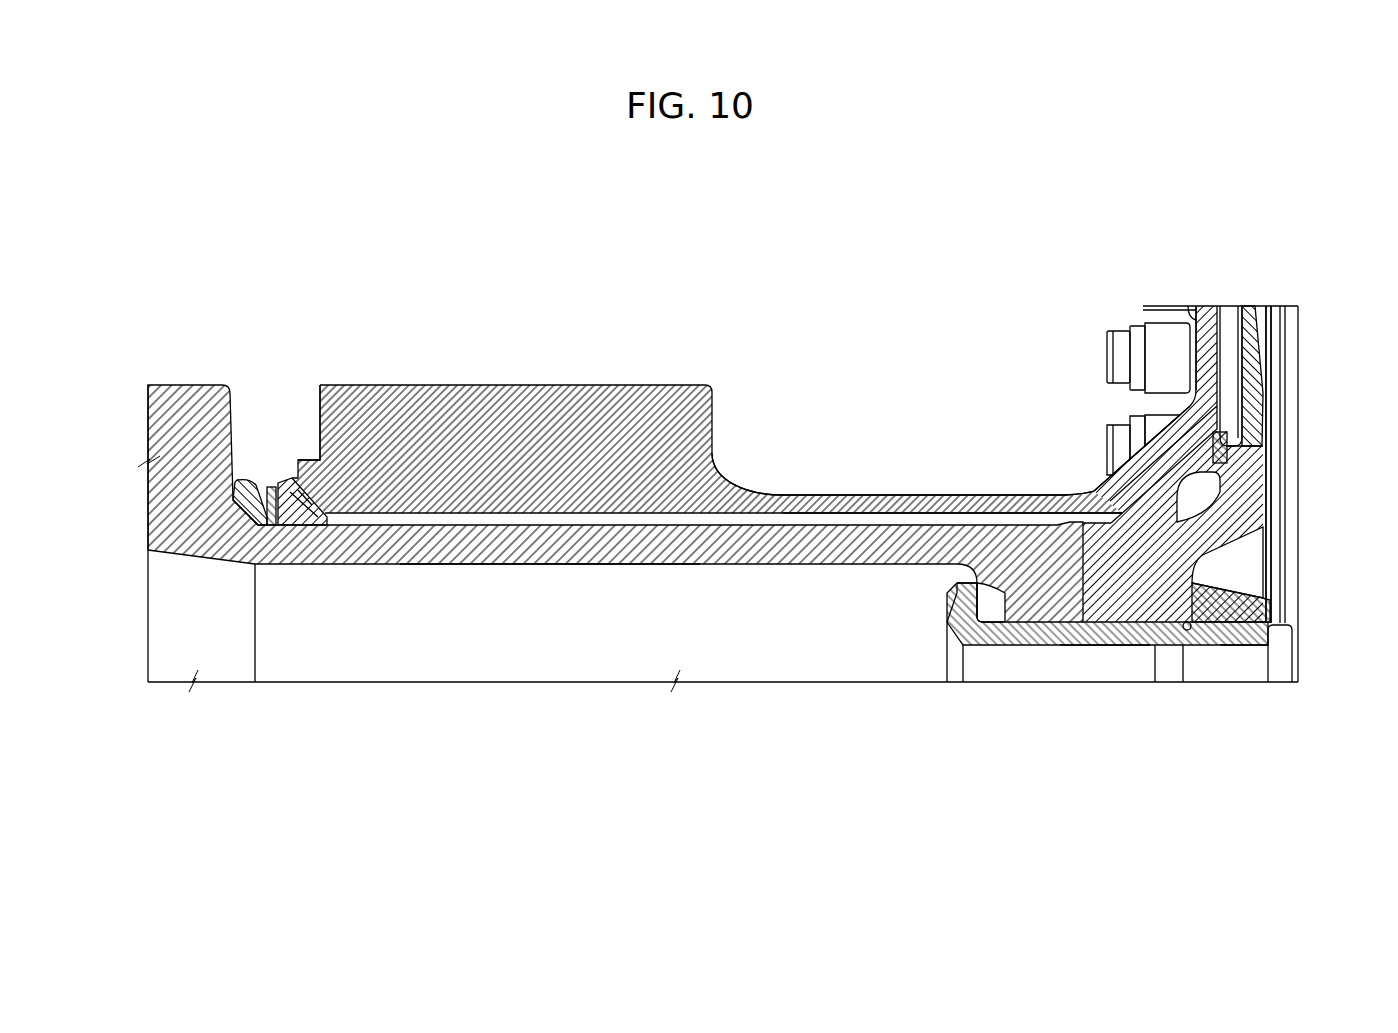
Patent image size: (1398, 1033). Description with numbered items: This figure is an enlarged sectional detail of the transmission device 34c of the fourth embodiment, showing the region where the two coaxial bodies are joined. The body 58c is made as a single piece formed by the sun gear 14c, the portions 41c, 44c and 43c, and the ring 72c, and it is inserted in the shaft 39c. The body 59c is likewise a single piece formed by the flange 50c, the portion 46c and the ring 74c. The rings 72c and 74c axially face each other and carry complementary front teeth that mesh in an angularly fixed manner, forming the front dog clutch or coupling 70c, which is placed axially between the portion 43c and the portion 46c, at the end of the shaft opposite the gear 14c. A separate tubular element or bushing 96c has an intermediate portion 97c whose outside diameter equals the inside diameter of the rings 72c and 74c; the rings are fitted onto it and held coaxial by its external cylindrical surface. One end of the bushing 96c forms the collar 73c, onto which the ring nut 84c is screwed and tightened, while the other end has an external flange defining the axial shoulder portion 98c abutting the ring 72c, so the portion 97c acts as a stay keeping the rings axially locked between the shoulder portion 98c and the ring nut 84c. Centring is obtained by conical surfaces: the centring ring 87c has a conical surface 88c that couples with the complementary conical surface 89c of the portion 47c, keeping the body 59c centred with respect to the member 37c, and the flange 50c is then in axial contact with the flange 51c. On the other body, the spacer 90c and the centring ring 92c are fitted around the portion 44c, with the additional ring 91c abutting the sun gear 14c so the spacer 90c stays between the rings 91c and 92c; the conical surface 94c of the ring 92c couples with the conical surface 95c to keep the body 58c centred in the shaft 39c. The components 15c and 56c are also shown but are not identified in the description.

The sun gear 14c is at (158, 386).
The outer ring 15c is at (503, 385).
The member 37c is at (332, 378).
The shaft 39c is at (830, 487).
The portion 41c is at (182, 562).
The portion 43c is at (620, 552).
The portion 44c is at (434, 695).
The portion 46c is at (1240, 592).
The portion 47c is at (1165, 440).
The flange 50c is at (1258, 388).
The flange 51c is at (1193, 336).
The bolt 56c is at (1158, 352).
The body 58c is at (528, 572).
The body 59c is at (1280, 460).
The front dog clutch or coupling 70c is at (1040, 624).
The ring 72c is at (993, 645).
The collar 73c is at (1289, 636).
The ring 74c is at (1177, 648).
The ring nut 84c is at (1237, 648).
The centring ring 87c is at (1125, 422).
The conical surface 88c is at (1113, 497).
The conical surface 89c is at (1215, 530).
The spacer 90c is at (268, 505).
The ring 91c is at (232, 503).
The centring ring 92c is at (305, 505).
The conical surface 94c is at (303, 492).
The conical surface 95c is at (271, 490).
The bushing 96c is at (1082, 653).
The intermediate portion 97c is at (1123, 646).
The axial shoulder portion 98c is at (958, 596).
The transmission device 34c is at (902, 338).